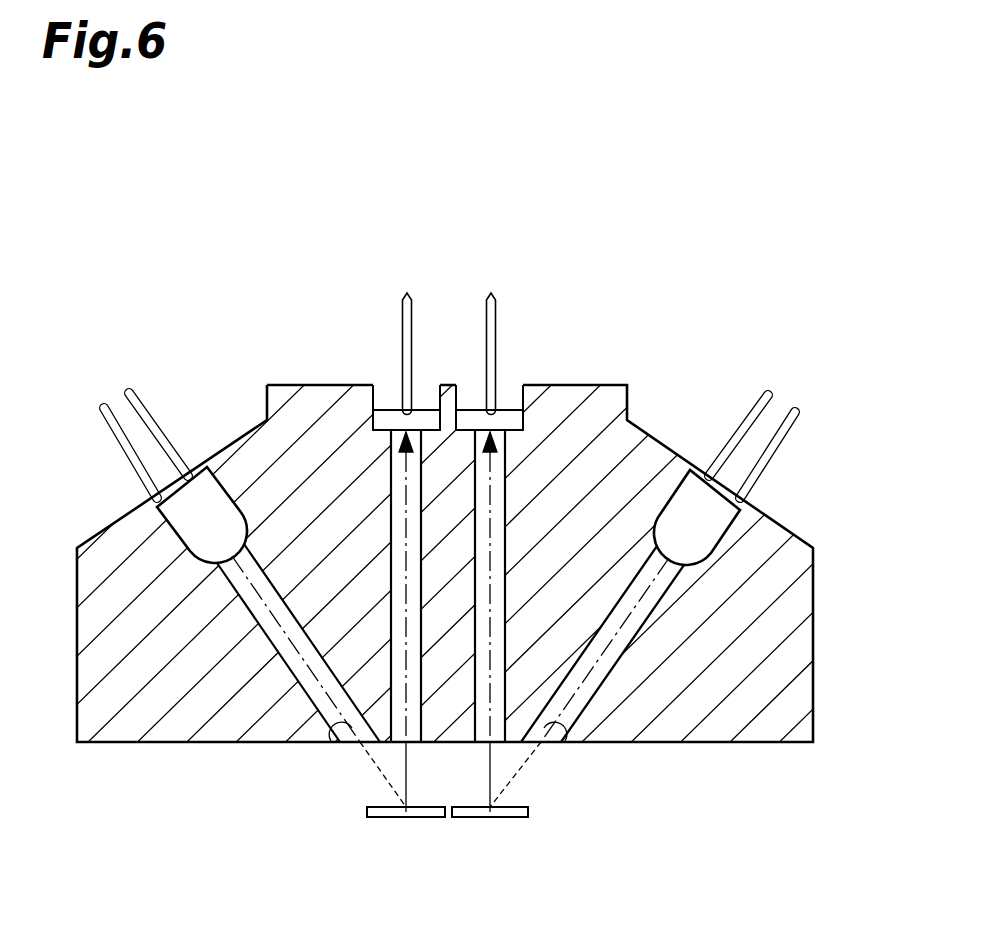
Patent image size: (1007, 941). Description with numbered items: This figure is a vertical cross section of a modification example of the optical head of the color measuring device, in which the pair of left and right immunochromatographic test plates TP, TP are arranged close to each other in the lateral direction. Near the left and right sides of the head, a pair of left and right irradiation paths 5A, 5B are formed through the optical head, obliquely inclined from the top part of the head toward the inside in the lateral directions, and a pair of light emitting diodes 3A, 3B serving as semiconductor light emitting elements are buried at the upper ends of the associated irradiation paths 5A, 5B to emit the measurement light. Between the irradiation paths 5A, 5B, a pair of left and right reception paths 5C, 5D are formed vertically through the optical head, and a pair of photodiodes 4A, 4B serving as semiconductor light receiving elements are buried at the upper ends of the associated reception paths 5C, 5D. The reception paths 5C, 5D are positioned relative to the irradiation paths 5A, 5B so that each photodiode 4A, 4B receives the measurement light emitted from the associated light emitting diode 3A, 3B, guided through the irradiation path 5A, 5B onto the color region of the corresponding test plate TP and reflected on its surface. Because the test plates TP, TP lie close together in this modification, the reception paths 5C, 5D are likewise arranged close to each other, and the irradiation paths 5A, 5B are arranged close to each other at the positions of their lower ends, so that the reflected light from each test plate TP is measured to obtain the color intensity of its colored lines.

The light emitting diode 3A is at (183, 517).
The light emitting diode 3B is at (723, 517).
The photodiode 4A is at (391, 409).
The photodiode 4B is at (505, 409).
The irradiation path 5A is at (352, 745).
The irradiation path 5B is at (544, 745).
The reception path 5C is at (388, 455).
The reception path 5D is at (508, 455).
The immunochromatographic test plate TP is at (487, 818).